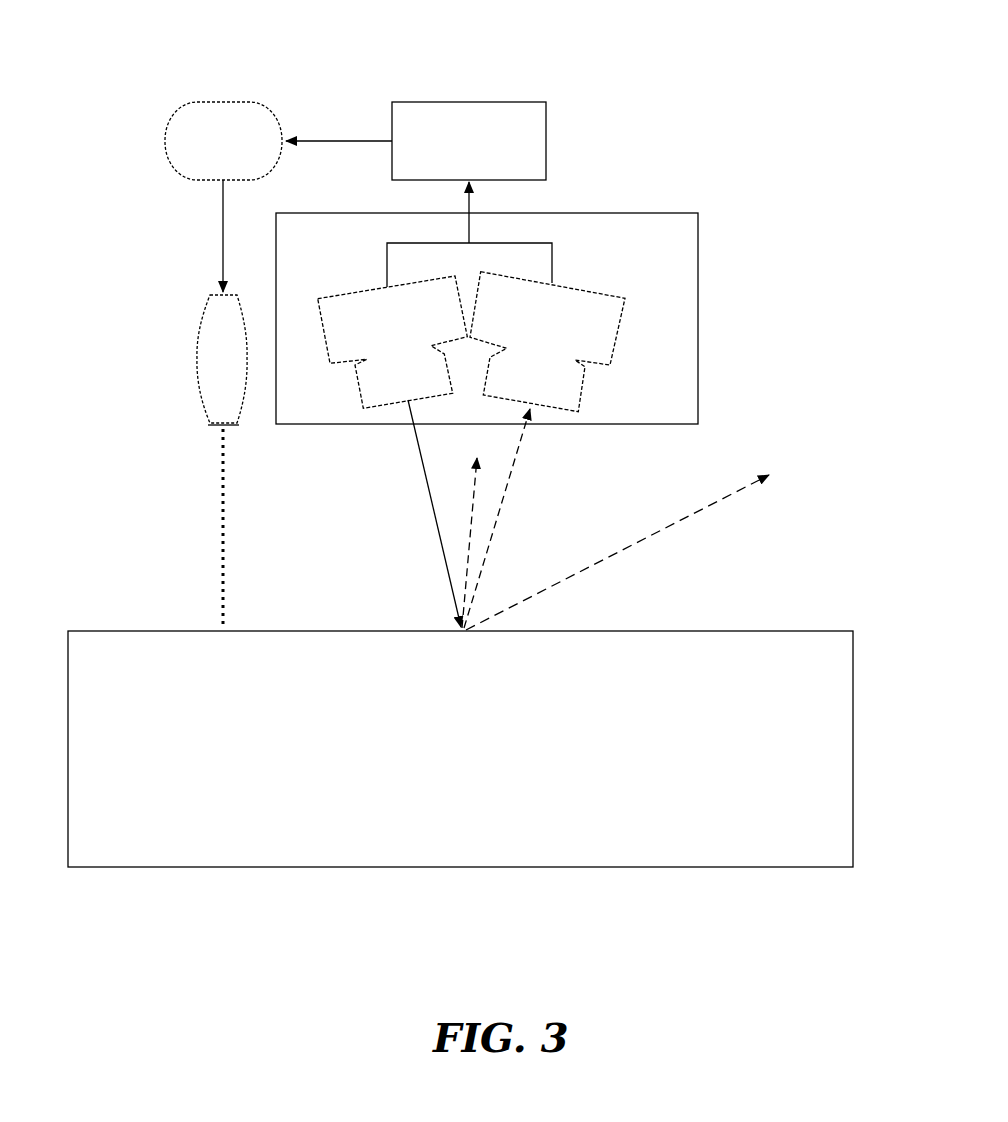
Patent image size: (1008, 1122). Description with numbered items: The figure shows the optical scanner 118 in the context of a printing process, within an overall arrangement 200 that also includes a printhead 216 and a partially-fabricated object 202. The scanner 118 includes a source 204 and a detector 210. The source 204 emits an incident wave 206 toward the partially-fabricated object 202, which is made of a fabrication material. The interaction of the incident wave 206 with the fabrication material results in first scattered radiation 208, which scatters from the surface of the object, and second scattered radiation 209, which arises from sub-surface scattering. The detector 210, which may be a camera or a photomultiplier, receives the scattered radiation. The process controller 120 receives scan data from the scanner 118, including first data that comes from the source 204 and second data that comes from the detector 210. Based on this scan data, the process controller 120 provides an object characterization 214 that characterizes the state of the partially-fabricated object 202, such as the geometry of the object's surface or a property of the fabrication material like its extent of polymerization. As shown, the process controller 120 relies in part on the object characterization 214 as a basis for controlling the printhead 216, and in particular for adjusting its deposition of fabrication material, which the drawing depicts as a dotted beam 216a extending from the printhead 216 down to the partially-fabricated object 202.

The inspection system 200 is at (305, 45).
The object characterization 214 is at (241, 152).
The process controller 120 is at (487, 148).
The scanner 118 is at (605, 212).
The source 204 is at (386, 287).
The detector 210 is at (553, 283).
The printhead 216 is at (197, 360).
The light beam 216a is at (222, 522).
The incident wave 206 is at (430, 508).
The first scattered radiation 208 is at (503, 497).
The second scattered radiation 209 is at (472, 517).
The partially-fabricated object 202 is at (463, 867).